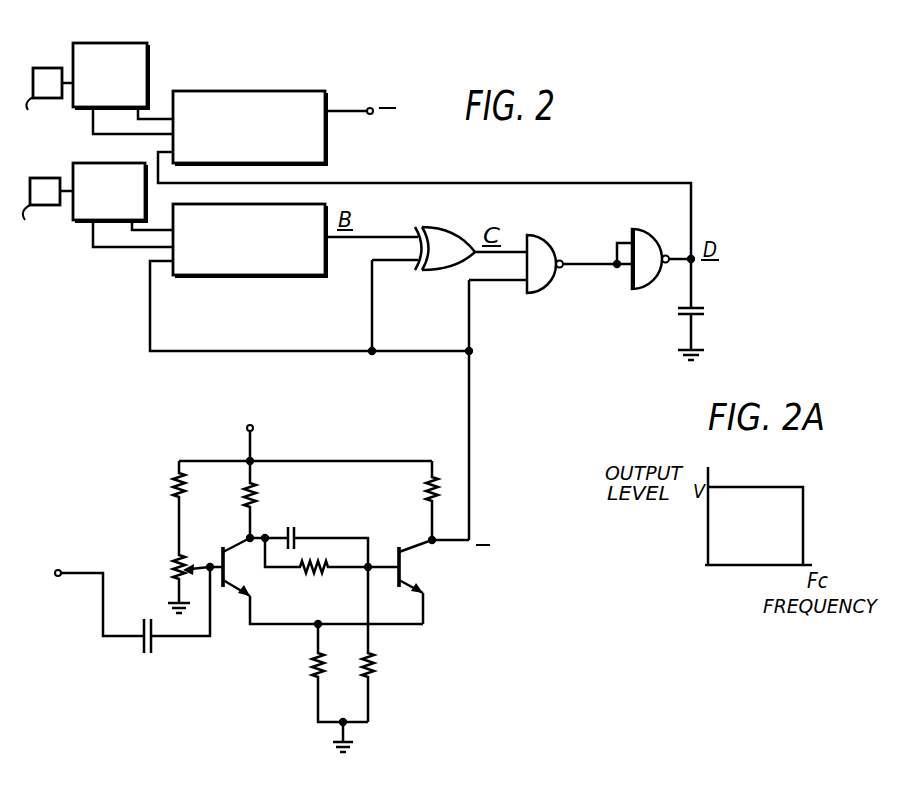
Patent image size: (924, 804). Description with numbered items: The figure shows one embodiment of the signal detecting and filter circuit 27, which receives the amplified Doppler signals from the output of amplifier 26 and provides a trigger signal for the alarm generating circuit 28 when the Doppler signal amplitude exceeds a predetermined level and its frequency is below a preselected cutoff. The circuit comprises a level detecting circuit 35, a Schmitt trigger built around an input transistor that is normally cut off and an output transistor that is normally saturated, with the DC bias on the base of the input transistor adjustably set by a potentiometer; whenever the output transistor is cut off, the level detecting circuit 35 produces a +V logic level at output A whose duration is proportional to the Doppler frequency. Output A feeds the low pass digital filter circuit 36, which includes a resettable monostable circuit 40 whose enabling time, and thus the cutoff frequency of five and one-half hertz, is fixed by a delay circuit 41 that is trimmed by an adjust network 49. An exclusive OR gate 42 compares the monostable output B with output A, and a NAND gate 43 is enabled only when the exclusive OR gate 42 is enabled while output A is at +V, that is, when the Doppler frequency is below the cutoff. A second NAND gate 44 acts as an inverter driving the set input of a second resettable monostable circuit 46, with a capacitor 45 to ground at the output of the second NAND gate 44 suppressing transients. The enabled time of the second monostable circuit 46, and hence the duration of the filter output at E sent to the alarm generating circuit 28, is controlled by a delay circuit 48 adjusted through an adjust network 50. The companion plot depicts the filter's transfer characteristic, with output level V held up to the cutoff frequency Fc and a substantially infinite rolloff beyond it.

The amplifier 26 is at (55, 577).
The signal detecting and filter circuit 27 is at (280, 577).
The alarm generating circuit 28 is at (408, 122).
The level detecting circuit 35 is at (461, 579).
The low pass digital filter circuit 36 is at (555, 267).
The resettable monostable circuit 40 is at (250, 240).
The delay circuit 41 is at (96, 165).
The exclusive OR gate 42 is at (447, 238).
The NAND gate 43 is at (545, 256).
The second NAND gate 44 is at (645, 244).
The capacitor 45 is at (706, 312).
The second resettable monostable circuit 46 is at (250, 128).
The delay circuit 48 is at (145, 43).
The adjust network 49 is at (47, 188).
The adjust network 50 is at (55, 76).